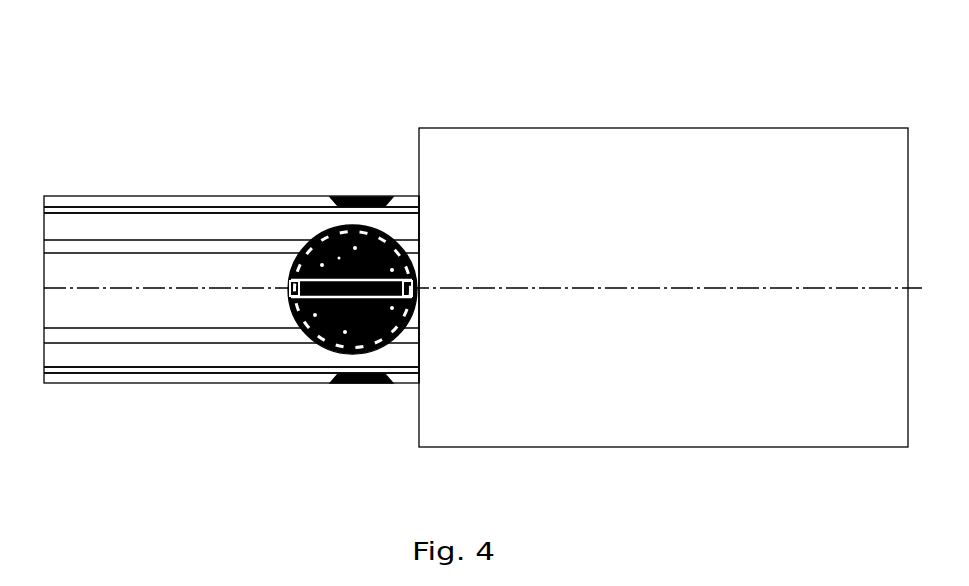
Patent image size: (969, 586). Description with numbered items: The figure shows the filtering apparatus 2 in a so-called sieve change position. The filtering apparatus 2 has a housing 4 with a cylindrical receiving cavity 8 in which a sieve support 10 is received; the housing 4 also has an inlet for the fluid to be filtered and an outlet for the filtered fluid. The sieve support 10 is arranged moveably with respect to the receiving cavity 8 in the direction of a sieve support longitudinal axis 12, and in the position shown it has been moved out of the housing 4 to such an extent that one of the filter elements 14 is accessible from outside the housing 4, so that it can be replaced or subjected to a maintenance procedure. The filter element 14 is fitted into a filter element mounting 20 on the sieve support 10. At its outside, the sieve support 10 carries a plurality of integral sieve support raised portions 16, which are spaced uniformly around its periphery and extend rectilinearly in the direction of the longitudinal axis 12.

The filtering apparatus 2 is at (121, 143).
The housing 4 is at (490, 185).
The receiving cavity 8 is at (413, 191).
The sieve support 10 is at (75, 412).
The sieve support longitudinal axis 12 is at (823, 288).
The filter element 14 is at (314, 238).
The sieve support raised portions 16 is at (167, 227).
The filter element mounting 20 is at (310, 351).